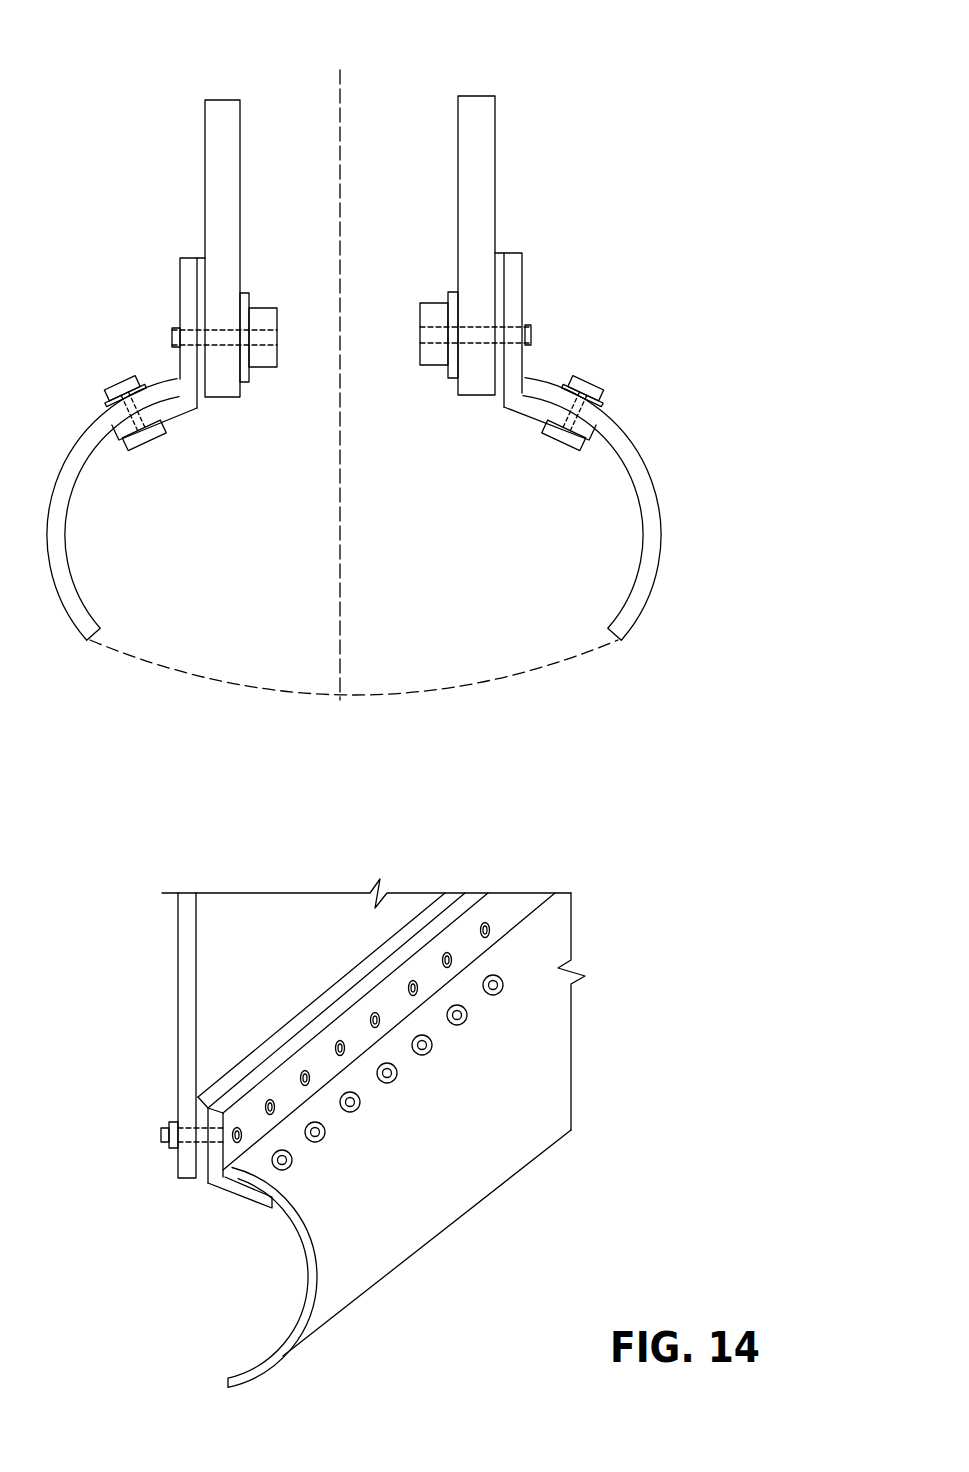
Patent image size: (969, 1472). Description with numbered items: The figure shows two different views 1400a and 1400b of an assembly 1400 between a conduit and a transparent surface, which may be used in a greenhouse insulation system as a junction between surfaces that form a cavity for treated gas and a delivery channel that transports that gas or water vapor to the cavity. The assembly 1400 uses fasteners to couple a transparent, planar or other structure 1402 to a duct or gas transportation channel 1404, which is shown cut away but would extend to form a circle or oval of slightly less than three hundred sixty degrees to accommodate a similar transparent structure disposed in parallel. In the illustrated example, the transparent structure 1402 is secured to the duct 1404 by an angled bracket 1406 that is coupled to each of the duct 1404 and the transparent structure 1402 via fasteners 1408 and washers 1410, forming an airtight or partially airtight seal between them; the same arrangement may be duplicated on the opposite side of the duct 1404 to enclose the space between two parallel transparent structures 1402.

The assembly 1400 is at (195, 420).
The view 1400a is at (745, 78).
The view 1400b is at (642, 870).
The transparent structure 1402 is at (497, 126).
The duct 1404 is at (607, 628).
The angled bracket 1406 is at (525, 421).
The fasteners 1408 is at (422, 368).
The washers 1410 is at (452, 292).